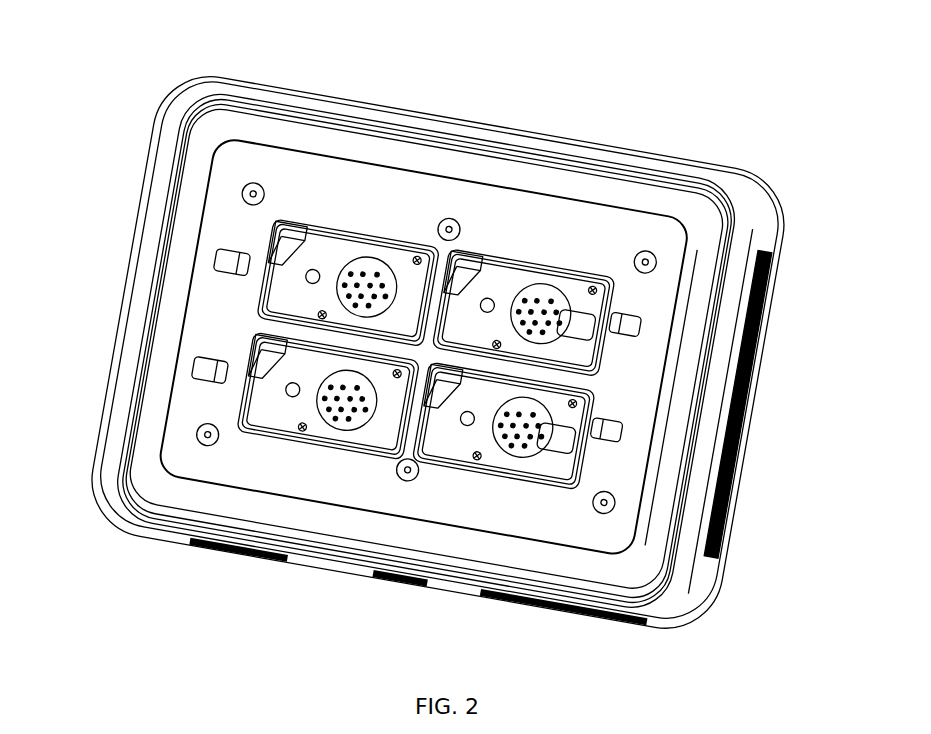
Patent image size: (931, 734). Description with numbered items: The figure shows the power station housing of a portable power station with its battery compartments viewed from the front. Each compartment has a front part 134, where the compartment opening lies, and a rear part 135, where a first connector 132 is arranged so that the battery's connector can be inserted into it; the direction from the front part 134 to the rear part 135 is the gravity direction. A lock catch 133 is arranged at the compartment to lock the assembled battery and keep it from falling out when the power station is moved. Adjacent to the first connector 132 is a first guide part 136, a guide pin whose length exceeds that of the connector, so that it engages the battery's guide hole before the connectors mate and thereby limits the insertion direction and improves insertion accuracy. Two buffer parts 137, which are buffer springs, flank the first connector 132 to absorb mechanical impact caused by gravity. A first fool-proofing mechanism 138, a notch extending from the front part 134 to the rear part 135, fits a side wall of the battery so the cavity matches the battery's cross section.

The first connector 132 is at (362, 277).
The lock catch 133 is at (605, 432).
The front part 134 is at (322, 215).
The rear part 135 is at (337, 255).
The first guide part 136 is at (475, 457).
The buffer part 137 is at (310, 278).
The first fool-proofing mechanism 138 is at (298, 225).